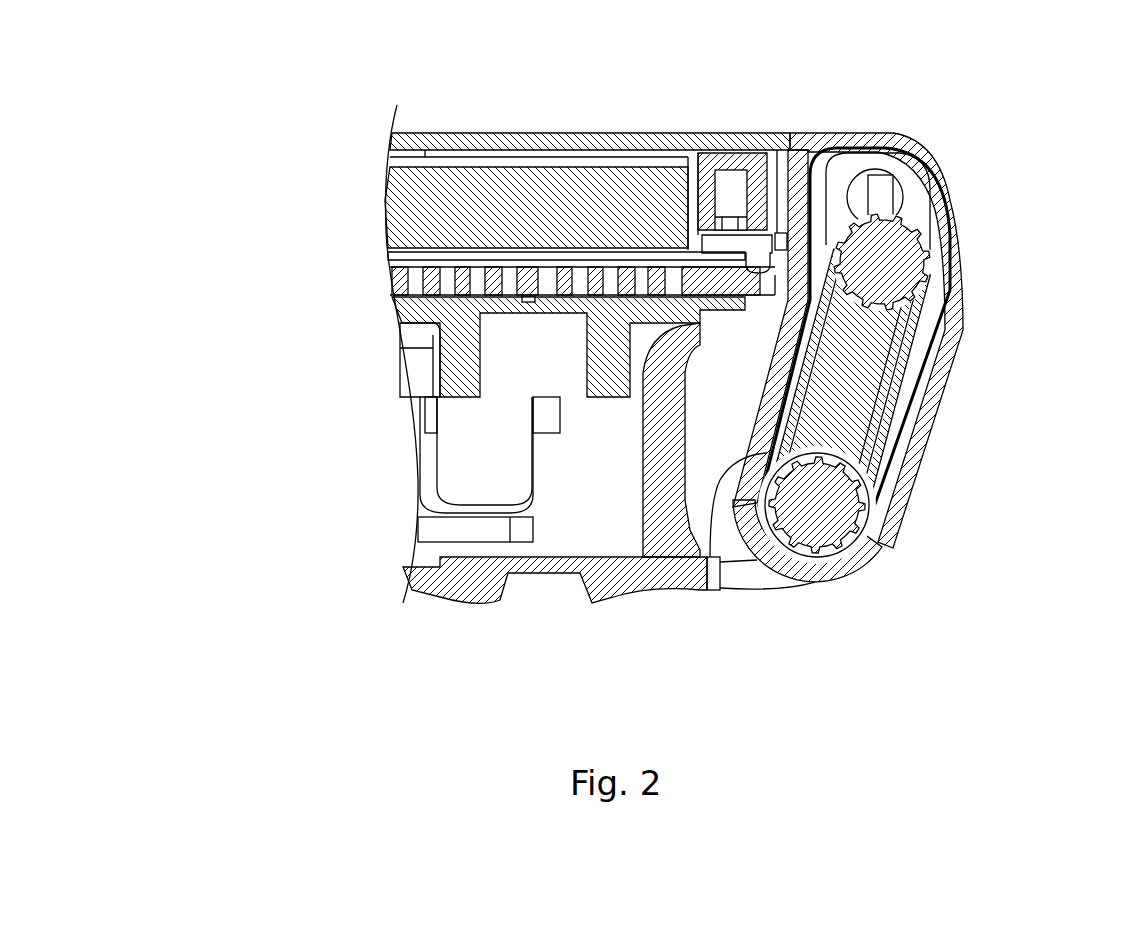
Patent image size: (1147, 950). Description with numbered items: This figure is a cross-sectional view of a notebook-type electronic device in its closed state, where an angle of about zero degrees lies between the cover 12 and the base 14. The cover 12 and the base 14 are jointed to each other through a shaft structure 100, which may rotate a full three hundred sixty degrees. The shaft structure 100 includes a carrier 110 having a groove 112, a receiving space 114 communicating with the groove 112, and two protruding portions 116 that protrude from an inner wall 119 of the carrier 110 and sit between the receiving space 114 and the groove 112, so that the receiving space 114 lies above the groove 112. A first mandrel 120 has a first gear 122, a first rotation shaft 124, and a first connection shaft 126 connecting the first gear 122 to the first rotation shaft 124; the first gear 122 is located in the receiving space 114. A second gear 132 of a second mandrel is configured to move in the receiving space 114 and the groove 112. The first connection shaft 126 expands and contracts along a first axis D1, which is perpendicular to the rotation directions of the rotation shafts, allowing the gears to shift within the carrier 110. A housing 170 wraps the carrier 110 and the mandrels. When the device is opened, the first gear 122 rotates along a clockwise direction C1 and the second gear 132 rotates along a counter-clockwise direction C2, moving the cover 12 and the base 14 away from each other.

The cover 12 is at (624, 148).
The base 14 is at (592, 603).
The shaft structure 100 is at (928, 571).
The carrier 110 is at (883, 409).
The groove 112 is at (882, 530).
The receiving space 114 is at (910, 383).
The protruding portions 116 is at (895, 499).
The inner wall 119 is at (909, 468).
The first mandrel 120 is at (974, 223).
The first gear 122 is at (943, 262).
The first rotation shaft 124 is at (925, 165).
The first connection shaft 126 is at (888, 186).
The second gear 132 is at (850, 525).
The housing 170 is at (918, 325).
The first axis D1 is at (978, 200).
The clockwise direction C1 is at (918, 108).
The counter-clockwise direction C2 is at (850, 603).